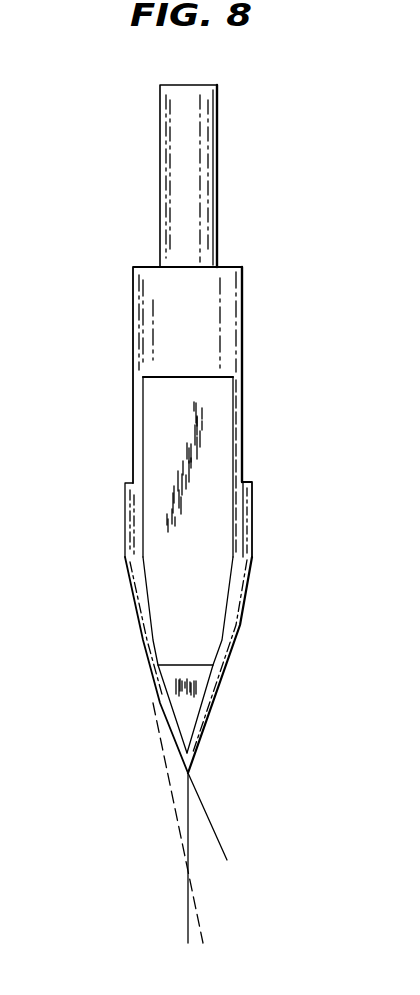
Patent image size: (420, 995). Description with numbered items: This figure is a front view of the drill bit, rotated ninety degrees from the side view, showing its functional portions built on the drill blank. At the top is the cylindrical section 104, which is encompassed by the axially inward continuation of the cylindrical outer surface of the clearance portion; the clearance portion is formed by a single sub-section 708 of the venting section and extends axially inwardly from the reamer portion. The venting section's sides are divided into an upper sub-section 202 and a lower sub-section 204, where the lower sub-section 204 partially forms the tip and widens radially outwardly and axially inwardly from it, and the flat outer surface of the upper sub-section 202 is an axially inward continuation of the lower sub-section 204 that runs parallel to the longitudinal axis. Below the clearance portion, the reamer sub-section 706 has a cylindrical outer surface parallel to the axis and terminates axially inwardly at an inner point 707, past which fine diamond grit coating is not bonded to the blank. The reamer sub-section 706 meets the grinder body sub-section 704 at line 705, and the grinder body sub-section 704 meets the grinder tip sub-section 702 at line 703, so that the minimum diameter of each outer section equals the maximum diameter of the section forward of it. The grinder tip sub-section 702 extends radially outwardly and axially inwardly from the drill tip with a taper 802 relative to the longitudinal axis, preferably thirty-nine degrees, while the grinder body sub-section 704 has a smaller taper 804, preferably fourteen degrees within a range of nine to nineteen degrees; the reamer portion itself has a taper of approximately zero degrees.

The cylindrical section 104 is at (243, 323).
The clearance portion sub-section 708 is at (243, 435).
The inner point of reamer sub-section 707 is at (125, 483).
The reamer sub-section 706 is at (252, 516).
The line between grinder body and reamer 705 is at (126, 557).
The grinder body sub-section 704 is at (243, 602).
The upper sub-section 202 is at (168, 608).
The line between grinder tip and grinder body 703 is at (153, 692).
The grinder tip sub-section 702 is at (218, 717).
The lower sub-section 204 is at (185, 712).
The taper of grinder tip sub-section 802 is at (250, 843).
The taper of grinder body sub-section 804 is at (230, 923).